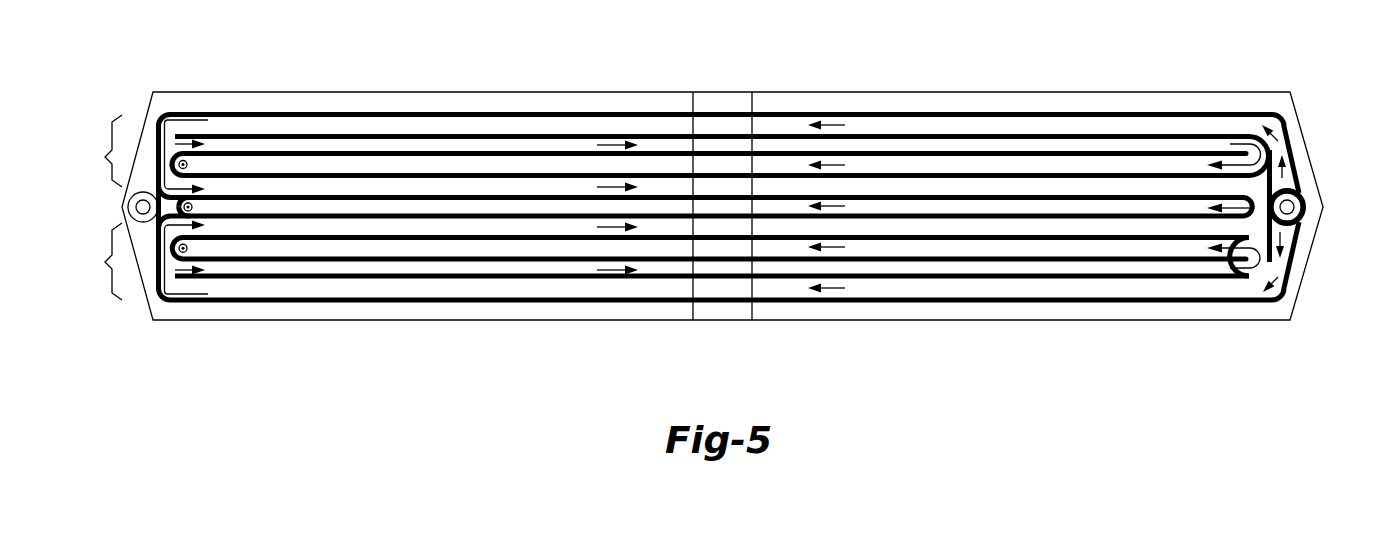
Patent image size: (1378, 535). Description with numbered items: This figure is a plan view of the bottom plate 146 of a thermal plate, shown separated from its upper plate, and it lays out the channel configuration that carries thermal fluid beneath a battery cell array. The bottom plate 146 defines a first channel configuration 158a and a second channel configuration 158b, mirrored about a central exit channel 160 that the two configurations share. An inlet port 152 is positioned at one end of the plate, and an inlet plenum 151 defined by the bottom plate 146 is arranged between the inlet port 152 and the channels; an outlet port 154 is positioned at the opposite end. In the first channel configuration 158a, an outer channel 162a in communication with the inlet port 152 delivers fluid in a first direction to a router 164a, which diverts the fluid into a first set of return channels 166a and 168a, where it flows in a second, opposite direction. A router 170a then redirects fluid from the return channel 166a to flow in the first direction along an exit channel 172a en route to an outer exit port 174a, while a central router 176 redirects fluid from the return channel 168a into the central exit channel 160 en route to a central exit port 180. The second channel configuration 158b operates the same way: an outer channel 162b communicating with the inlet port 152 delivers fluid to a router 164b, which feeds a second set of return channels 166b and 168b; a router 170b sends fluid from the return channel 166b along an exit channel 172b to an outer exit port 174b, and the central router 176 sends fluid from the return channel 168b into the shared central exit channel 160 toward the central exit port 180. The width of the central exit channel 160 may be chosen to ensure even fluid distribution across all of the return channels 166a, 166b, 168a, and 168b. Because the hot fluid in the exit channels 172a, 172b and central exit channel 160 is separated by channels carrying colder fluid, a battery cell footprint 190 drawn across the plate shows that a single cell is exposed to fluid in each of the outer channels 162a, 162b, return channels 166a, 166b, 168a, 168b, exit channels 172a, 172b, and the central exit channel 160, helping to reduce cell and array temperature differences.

The bottom plate 146 is at (447, 92).
The inlet plenum 151 is at (1292, 233).
The inlet port 152 is at (1262, 190).
The outlet port 154 is at (128, 200).
The first channel configuration 158a is at (653, 161).
The second channel configuration 158b is at (653, 253).
The central exit channel 160 is at (878, 205).
The outer channel 162a is at (235, 121).
The outer channel 162b is at (235, 294).
The router 164a is at (156, 121).
The router 164b is at (157, 295).
The return channel 166a is at (288, 141).
The return channel 166b is at (288, 271).
The return channel 168a is at (342, 178).
The return channel 168b is at (337, 228).
The router 170a is at (1248, 122).
The router 170b is at (1243, 296).
The exit channel 172a is at (495, 165).
The exit channel 172b is at (495, 246).
The outer exit port 174a is at (183, 160).
The outer exit port 174b is at (183, 253).
The central router 176 is at (1288, 205).
The central exit port 180 is at (188, 208).
The battery cell footprint 190 is at (718, 92).